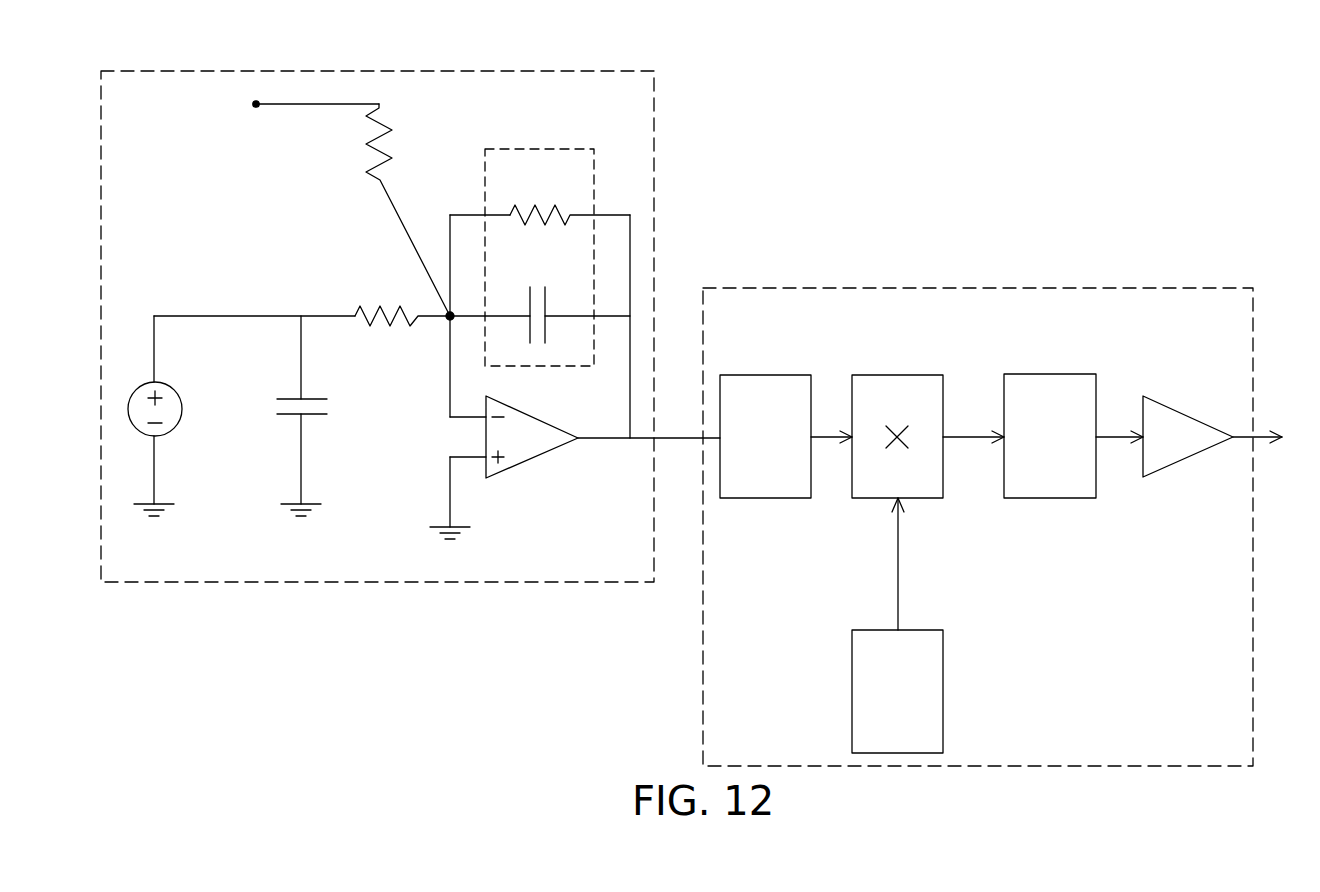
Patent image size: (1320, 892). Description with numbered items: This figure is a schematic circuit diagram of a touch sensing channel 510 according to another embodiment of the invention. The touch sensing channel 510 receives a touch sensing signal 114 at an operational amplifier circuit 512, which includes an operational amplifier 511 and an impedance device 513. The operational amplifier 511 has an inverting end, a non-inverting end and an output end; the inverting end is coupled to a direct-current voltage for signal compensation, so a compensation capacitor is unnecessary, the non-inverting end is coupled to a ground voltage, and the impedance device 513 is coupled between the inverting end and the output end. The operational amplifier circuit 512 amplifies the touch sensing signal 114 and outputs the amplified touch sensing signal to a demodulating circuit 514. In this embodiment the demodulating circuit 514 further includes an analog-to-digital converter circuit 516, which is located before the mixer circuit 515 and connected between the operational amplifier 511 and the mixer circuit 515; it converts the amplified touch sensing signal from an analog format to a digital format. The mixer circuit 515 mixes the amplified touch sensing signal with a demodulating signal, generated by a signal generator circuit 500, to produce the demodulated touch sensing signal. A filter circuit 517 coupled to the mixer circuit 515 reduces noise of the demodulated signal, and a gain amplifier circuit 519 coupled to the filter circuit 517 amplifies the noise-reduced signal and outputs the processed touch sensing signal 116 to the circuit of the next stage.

The touch sensing channel 510 is at (506, 643).
The operational amplifier 511 is at (527, 460).
The operational amplifier circuit 512 is at (655, 155).
The impedance device 513 is at (530, 149).
The demodulating circuit 514 is at (1140, 287).
The mixer circuit 515 is at (898, 375).
The analog-to-digital converter circuit 516 is at (751, 375).
The filter circuit 517 is at (1050, 498).
The gain amplifier circuit 519 is at (1188, 460).
The signal generator circuit 500 is at (943, 692).
The processed touch sensing signal 116 is at (1276, 438).
The touch sensing signal 114 is at (176, 416).